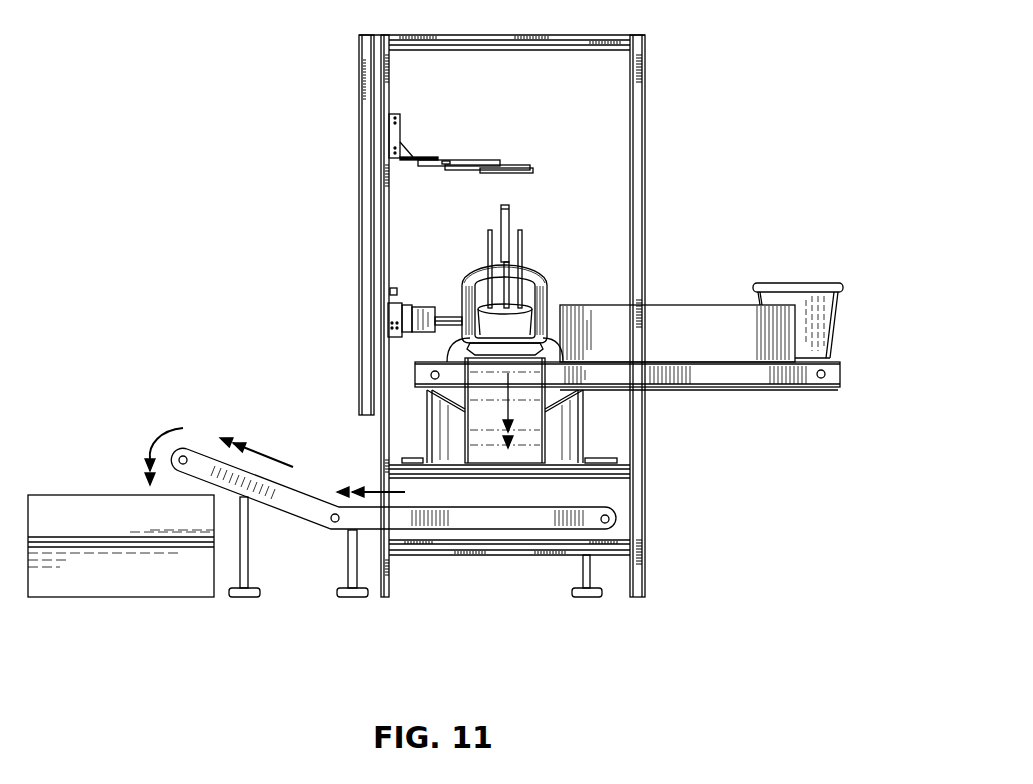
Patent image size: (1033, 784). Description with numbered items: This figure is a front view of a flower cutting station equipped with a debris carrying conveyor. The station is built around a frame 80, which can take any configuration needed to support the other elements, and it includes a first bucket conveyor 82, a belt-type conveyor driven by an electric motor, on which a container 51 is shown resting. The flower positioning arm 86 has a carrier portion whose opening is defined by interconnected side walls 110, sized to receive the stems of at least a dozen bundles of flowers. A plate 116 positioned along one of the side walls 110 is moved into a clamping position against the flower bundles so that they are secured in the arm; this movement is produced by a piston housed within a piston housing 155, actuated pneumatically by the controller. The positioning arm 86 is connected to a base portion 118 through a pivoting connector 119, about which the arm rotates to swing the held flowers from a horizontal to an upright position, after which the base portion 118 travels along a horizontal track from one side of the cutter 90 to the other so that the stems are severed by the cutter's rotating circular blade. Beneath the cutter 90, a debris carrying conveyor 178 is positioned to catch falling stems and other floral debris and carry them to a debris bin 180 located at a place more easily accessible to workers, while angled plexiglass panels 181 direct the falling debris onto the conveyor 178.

The frame 80 is at (645, 80).
The first bucket conveyor 82 is at (833, 381).
The container 51 is at (805, 297).
The flower positioning arm 86 is at (532, 272).
The cutter 90 is at (548, 347).
The side walls 110 is at (547, 289).
The plate 116 is at (484, 312).
The base portion 118 is at (420, 306).
The pivoting connector 119 is at (455, 310).
The piston housing 155 is at (509, 208).
The debris carrying conveyor 178 is at (200, 448).
The debris bin 180 is at (66, 493).
The angled plexiglass panels 181 is at (570, 437).